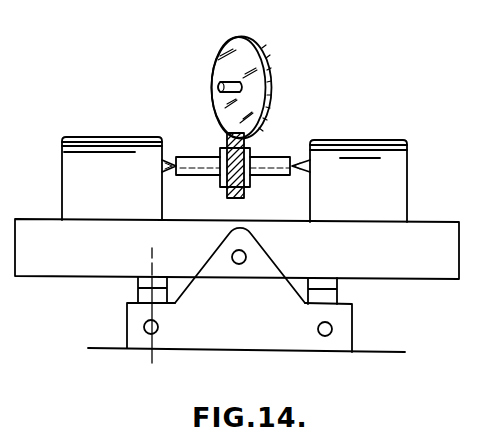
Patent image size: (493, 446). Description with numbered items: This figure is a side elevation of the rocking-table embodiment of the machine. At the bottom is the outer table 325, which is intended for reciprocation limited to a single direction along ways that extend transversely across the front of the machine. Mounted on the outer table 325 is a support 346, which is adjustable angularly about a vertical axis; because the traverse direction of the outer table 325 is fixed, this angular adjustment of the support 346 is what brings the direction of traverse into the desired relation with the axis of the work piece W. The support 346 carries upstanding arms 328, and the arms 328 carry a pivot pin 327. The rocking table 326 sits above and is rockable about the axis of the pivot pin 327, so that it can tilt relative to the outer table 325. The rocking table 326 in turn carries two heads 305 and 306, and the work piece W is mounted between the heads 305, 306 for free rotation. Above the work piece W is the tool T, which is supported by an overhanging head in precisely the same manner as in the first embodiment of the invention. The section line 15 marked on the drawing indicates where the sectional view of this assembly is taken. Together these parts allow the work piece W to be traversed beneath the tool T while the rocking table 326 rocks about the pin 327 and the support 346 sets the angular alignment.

The head 305 is at (96, 148).
The head 306 is at (366, 149).
The tool T is at (272, 90).
The work piece W is at (250, 140).
The rocking table 326 is at (437, 232).
The upstanding arms 328 is at (264, 249).
The pivot pin 327 is at (245, 262).
The section line 15- 15 is at (158, 307).
The support 346 is at (348, 324).
The outer table 325 is at (393, 352).